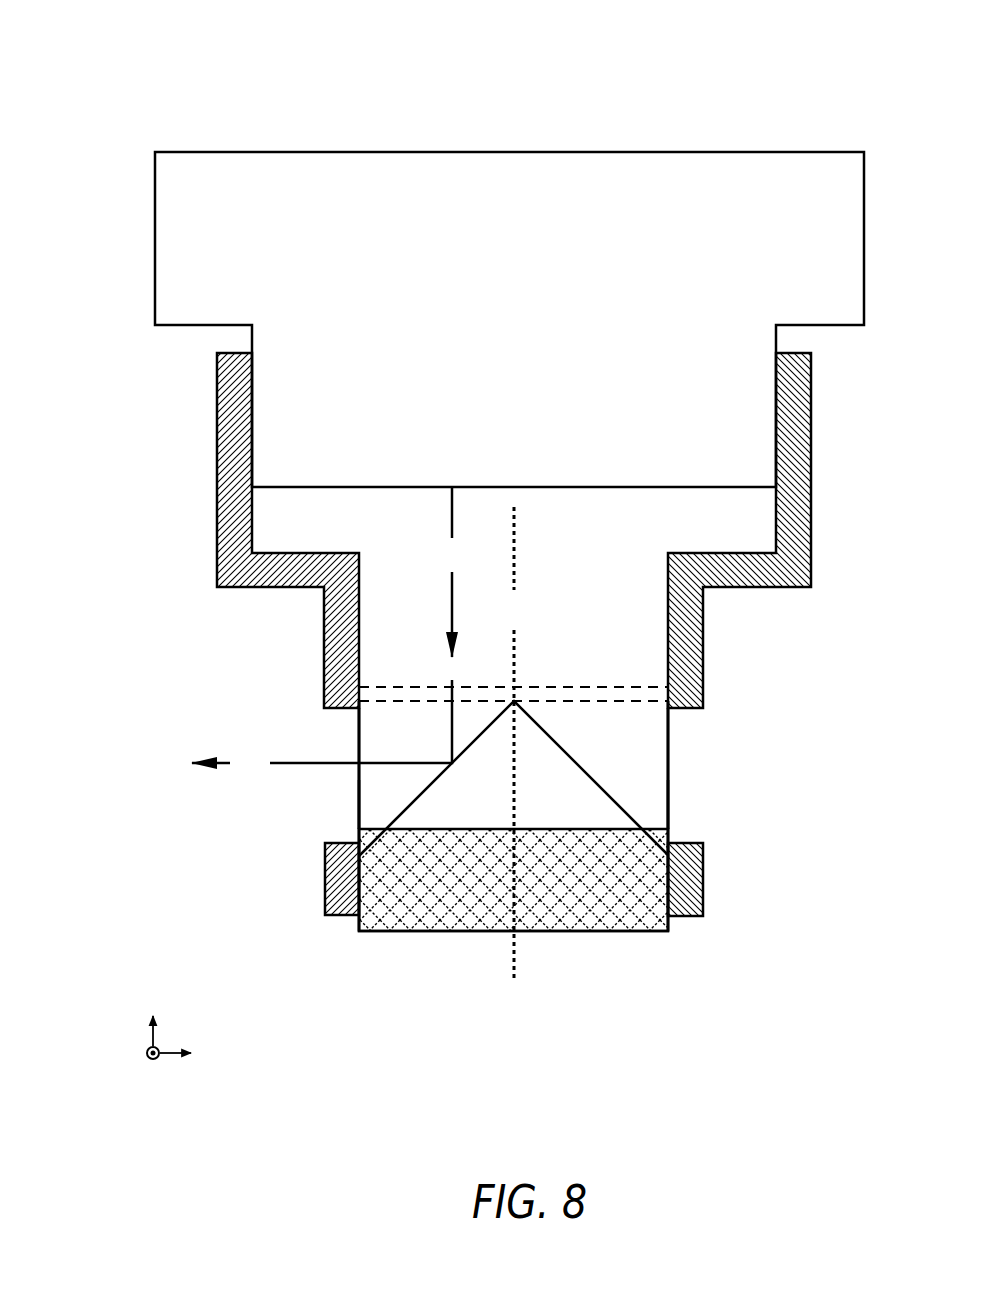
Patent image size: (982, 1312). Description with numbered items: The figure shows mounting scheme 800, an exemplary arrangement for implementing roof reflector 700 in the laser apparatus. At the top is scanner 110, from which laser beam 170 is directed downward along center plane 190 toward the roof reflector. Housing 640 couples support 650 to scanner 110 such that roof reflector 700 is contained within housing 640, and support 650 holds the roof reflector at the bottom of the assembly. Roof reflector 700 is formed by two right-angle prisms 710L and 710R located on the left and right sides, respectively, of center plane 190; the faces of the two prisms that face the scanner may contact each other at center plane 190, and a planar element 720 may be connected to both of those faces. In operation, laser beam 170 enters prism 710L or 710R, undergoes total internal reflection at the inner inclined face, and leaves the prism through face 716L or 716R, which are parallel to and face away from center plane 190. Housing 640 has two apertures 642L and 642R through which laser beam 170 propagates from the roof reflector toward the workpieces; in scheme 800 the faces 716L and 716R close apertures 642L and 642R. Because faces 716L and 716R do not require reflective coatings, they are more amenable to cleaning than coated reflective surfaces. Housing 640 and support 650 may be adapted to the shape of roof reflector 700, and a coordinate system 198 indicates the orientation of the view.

The mounting scheme 800 is at (133, 60).
The scanner 110 is at (509, 319).
The housing 640 is at (217, 432).
The roof reflector 700 is at (587, 666).
The planar element 720 is at (412, 686).
The right-angle prism 710L is at (387, 816).
The right-angle prism 710R is at (632, 816).
The support 650 is at (513, 880).
The aperture 642L is at (321, 740).
The aperture 642R is at (702, 772).
The lateral face 716L is at (356, 803).
The lateral face 716R is at (672, 803).
The laser beam 170 is at (330, 631).
The center plane 190 is at (516, 742).
The coordinate system 198 is at (130, 1042).